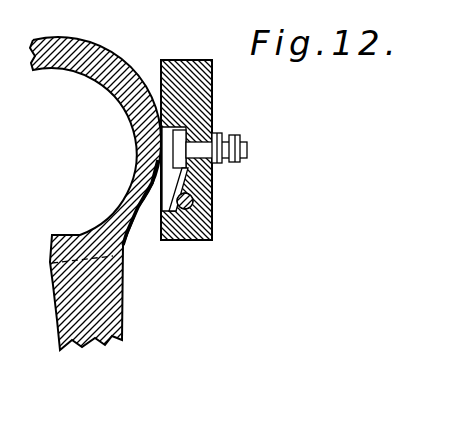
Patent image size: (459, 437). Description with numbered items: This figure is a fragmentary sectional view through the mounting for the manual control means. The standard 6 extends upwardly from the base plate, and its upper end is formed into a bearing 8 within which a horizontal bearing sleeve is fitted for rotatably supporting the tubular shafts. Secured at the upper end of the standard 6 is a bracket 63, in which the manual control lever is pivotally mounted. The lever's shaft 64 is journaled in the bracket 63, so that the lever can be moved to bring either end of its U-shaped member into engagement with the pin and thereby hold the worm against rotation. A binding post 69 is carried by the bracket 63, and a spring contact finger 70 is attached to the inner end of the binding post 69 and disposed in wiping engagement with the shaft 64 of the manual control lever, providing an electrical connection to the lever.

The bearing 8 is at (118, 53).
The standard 6 is at (118, 305).
The bracket 63 is at (212, 95).
The shaft 64 is at (192, 202).
The binding post 69 is at (248, 147).
The spring contact finger 70 is at (172, 186).